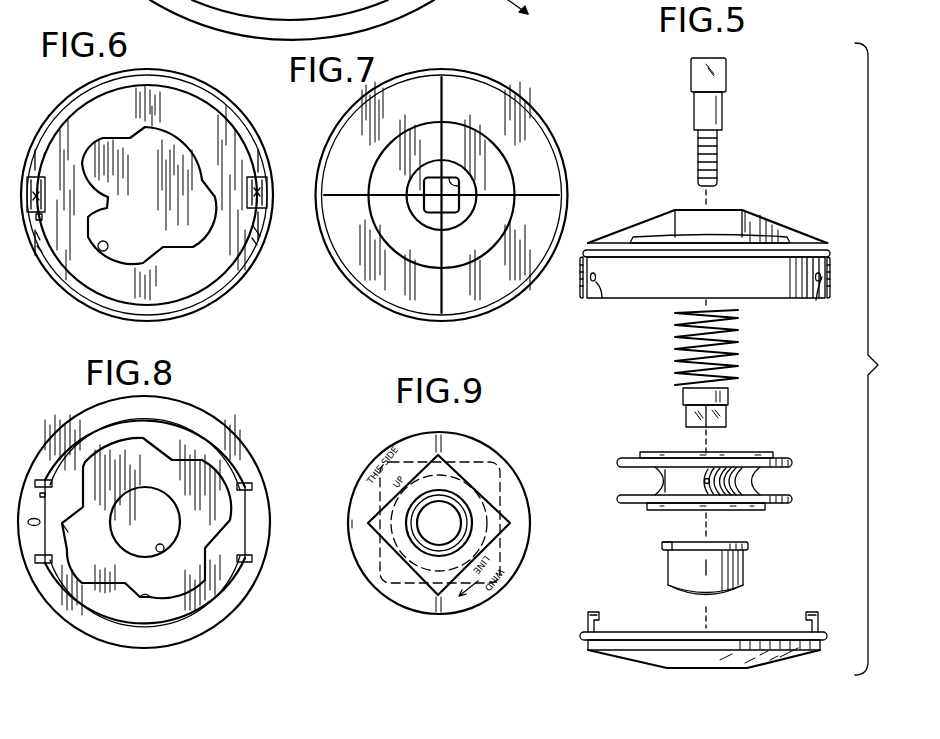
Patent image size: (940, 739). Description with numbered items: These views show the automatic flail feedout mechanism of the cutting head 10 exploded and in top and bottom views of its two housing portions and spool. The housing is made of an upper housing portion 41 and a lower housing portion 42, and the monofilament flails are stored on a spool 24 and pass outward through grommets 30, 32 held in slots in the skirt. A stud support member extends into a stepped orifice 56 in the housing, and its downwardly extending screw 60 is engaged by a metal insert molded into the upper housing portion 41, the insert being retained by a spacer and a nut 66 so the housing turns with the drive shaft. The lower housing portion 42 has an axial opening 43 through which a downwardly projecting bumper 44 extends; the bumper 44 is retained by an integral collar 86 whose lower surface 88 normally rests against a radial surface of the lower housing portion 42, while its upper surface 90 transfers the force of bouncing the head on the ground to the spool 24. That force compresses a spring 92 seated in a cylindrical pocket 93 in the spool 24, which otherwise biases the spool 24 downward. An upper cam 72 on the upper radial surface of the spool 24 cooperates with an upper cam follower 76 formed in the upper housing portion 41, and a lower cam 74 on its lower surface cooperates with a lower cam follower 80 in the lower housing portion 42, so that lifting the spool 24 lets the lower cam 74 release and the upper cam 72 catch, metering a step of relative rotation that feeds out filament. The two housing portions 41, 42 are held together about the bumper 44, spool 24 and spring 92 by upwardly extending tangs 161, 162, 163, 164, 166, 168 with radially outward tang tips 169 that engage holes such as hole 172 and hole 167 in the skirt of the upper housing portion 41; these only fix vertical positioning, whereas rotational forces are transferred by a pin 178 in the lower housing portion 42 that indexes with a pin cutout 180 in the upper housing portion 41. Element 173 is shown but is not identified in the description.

In FIG. 5, the cutting head 10 is at (881, 359).
In FIG. 5, the spool 24 is at (785, 458).
In FIG. 9, the spool 24 is at (493, 457).
In FIG. 6, the grommet 30 is at (46, 181).
In FIG. 5, the grommet 30 is at (582, 282).
In FIG. 6, the grommet 32 is at (268, 187).
In FIG. 5, the grommet 32 is at (827, 280).
In FIG. 6, the upper housing portion 41 is at (200, 80).
In FIG. 7, the upper housing portion 41 is at (522, 97).
In FIG. 5, the upper housing portion 41 is at (788, 247).
In FIG. 5, the lower housing portion 42 is at (770, 665).
In FIG. 8, the lower housing portion 42 is at (238, 442).
In FIG. 5, the axial opening 43 is at (673, 668).
In FIG. 8, the axial opening 43 is at (161, 552).
In FIG. 5, the bumper 44 is at (743, 568).
In FIG. 7, the stepped orifice 56 is at (455, 182).
In FIG. 5, the screw 60 is at (719, 149).
In FIG. 5, the nut 66 is at (729, 413).
In FIG. 5, the upper cam 72 is at (660, 452).
In FIG. 9, the upper cam 72 is at (493, 520).
In FIG. 5, the lower cam 74 is at (653, 510).
In FIG. 9, the lower cam 74 is at (405, 585).
In FIG. 6, the upper cam follower 76 is at (105, 250).
In FIG. 8, the lower cam follower 80 is at (143, 607).
In FIG. 5, the collar 86 is at (665, 548).
In FIG. 5, the lower surface of collar 88 is at (673, 555).
In FIG. 5, the upper surface of collar 90 is at (727, 542).
In FIG. 5, the spring 92 is at (737, 332).
In FIG. 9, the cylindrical pocket 93 is at (443, 490).
In FIG. 5, the tang 161 is at (817, 612).
In FIG. 8, the tang 161 is at (257, 558).
In FIG. 8, the tang 162 is at (257, 488).
In FIG. 5, the tang 163 is at (593, 612).
In FIG. 8, the tang 163 is at (40, 565).
In FIG. 8, the tang 164 is at (40, 477).
In FIG. 6, the tang 166 is at (267, 148).
In FIG. 5, the tang 166 is at (813, 298).
In FIG. 6, the hole 167 is at (263, 240).
In FIG. 6, the tang 168 is at (39, 145).
In FIG. 5, the tang 168 is at (600, 300).
In FIG. 6, the tang tip 169 is at (38, 248).
In FIG. 7, the hole 172 is at (318, 195).
In FIG. 8, the opening 173 is at (40, 522).
In FIG. 8, the pin 178 is at (75, 507).
In FIG. 6, the pin cutout 180 is at (38, 218).